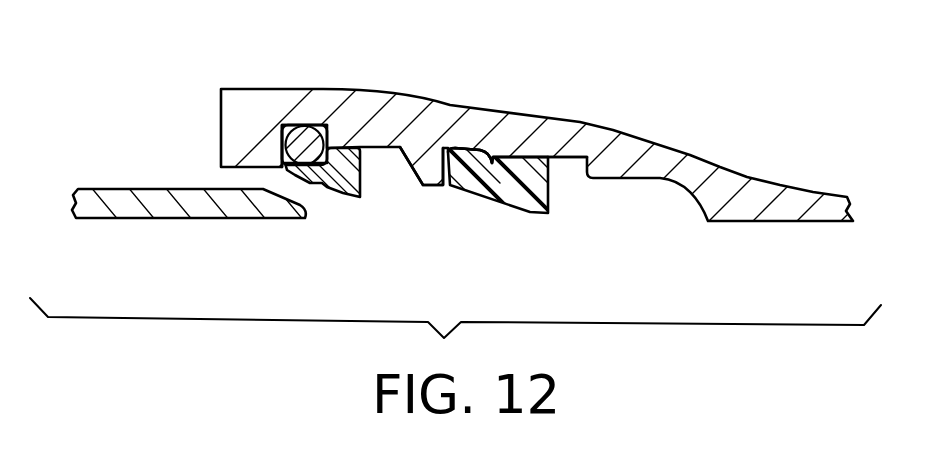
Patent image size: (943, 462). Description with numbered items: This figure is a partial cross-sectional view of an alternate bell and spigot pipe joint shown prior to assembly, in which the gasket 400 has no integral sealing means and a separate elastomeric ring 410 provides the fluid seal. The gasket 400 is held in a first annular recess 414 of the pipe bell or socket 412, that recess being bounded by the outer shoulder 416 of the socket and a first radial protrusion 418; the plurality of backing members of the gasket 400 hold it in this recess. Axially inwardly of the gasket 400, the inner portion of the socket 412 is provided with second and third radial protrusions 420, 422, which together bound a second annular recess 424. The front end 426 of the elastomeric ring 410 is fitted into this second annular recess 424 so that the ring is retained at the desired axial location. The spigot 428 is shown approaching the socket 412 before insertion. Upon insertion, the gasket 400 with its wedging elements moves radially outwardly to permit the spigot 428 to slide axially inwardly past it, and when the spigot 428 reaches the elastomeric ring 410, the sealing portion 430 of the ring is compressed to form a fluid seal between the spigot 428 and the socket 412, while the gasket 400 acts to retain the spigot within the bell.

The gasket 400 is at (340, 204).
The elastomeric ring 410 is at (513, 215).
The pipe bell or socket 412 is at (437, 100).
The first annular recess 414 is at (314, 125).
The outer shoulder 416 is at (282, 152).
The first radial protrusion 418 is at (336, 148).
The second radial protrusion 420 is at (430, 165).
The third radial protrusion 422 is at (494, 160).
The second annular recess 424 is at (491, 160).
The front end of the elastomeric sealing ring 426 is at (475, 175).
The spigot 428 is at (228, 219).
The sealing portion 430 is at (553, 197).